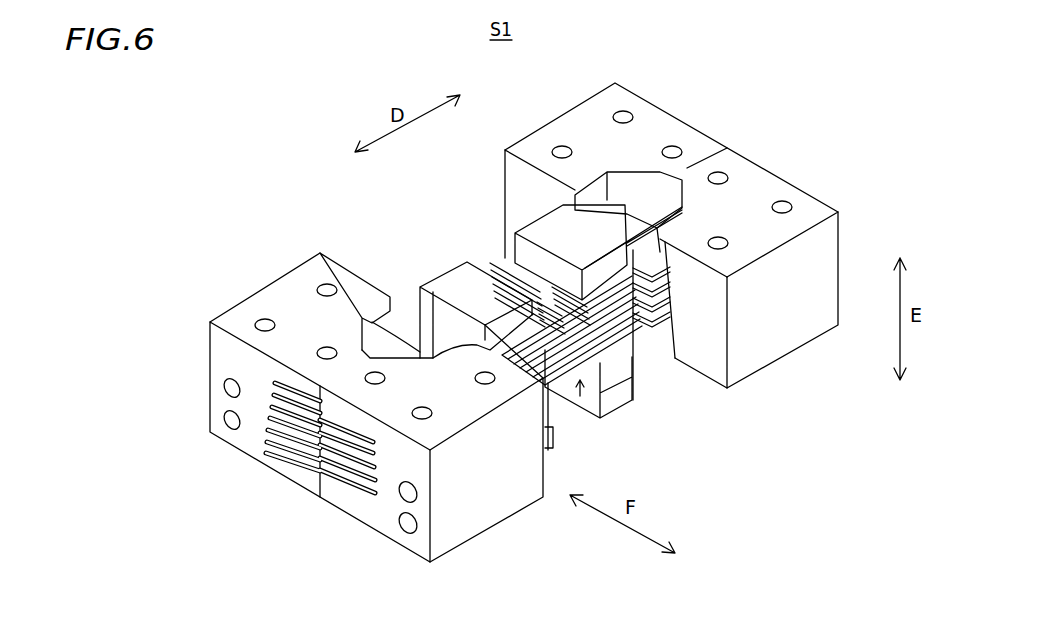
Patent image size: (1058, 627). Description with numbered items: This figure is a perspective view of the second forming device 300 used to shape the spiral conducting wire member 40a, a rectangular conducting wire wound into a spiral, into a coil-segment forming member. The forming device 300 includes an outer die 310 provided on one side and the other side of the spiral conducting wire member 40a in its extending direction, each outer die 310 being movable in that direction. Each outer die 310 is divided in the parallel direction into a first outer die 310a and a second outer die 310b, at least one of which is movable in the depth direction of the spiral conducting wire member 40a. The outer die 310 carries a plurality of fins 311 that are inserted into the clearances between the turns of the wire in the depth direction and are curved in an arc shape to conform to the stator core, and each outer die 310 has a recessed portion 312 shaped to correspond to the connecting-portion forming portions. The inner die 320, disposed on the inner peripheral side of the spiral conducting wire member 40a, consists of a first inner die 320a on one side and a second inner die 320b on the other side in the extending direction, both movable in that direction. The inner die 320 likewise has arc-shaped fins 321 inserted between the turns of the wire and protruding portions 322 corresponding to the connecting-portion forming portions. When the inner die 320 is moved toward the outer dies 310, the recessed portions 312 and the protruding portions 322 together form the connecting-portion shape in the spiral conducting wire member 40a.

The forming device 300 is at (285, 119).
The outer die 310 is at (213, 217).
The first outer die 310a is at (318, 372).
The second outer die 310b is at (340, 383).
The fins 311 is at (372, 320).
The recessed portion 312 is at (337, 265).
The inner die 320 is at (393, 222).
The first inner die 320a is at (547, 243).
The second inner die 320b is at (465, 268).
The fins 321 is at (563, 293).
The protruding portions 322 is at (600, 182).
The spiral conducting wire member 40a is at (582, 390).